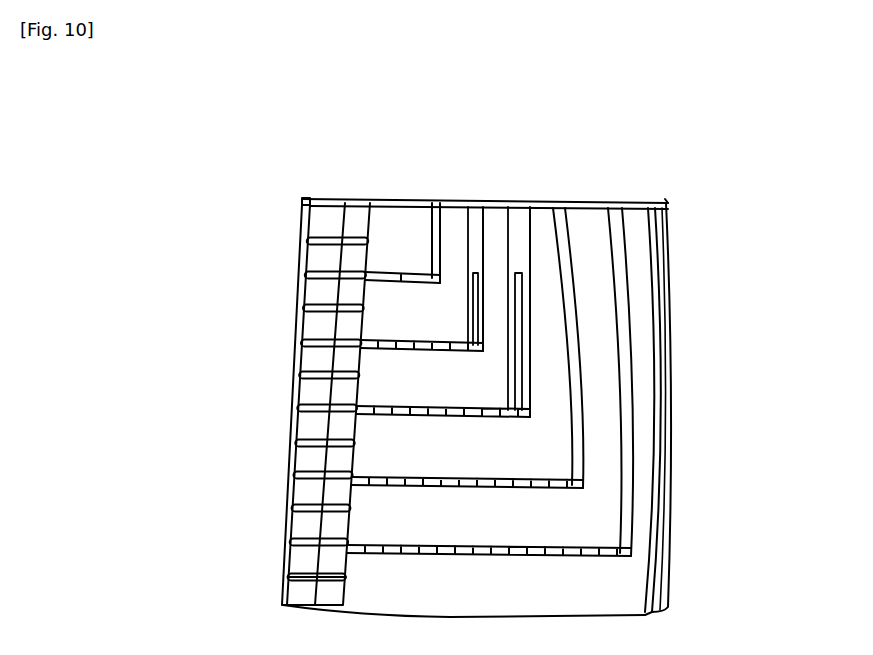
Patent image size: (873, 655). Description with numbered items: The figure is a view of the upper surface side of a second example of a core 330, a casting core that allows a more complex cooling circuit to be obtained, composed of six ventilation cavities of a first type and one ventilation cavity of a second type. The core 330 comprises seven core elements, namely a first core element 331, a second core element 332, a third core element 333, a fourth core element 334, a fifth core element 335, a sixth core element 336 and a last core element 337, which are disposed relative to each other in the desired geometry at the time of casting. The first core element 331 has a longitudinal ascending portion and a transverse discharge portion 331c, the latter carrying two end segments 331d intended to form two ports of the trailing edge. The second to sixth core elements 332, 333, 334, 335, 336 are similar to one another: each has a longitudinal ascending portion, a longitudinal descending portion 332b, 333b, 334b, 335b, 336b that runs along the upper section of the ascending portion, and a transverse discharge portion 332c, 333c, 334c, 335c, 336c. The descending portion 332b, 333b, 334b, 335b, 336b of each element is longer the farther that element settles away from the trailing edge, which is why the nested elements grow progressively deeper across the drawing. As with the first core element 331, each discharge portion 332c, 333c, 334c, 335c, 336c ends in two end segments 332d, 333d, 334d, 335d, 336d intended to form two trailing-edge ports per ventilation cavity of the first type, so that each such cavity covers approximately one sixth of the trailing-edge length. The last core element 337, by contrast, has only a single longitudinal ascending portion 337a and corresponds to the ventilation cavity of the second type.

The core 330 is at (742, 184).
The first core element 331 is at (397, 200).
The transverse discharge portion 331c is at (374, 206).
The end segments 331d is at (298, 245).
The second core element 332 is at (449, 206).
The longitudinal descending portion 332b is at (457, 236).
The transverse discharge portion 332c is at (402, 313).
The end segments 332d is at (294, 318).
The third core element 333 is at (482, 206).
The longitudinal descending portion 333b is at (497, 265).
The transverse discharge portion 333c is at (398, 385).
The end segments 333d is at (292, 385).
The fourth core element 334 is at (524, 206).
The longitudinal descending portion 334b is at (548, 400).
The transverse discharge portion 334c is at (398, 452).
The end segments 334d is at (287, 450).
The fifth core element 335 is at (563, 206).
The longitudinal descending portion 335b is at (603, 457).
The transverse discharge portion 335c is at (397, 520).
The end segments 335d is at (287, 520).
The sixth core element 336 is at (625, 206).
The longitudinal descending portion 336b is at (643, 524).
The transverse discharge portion 336c is at (392, 592).
The end segments 336d is at (287, 595).
The seventh core element 337 is at (648, 206).
The longitudinal ascending portion 337a is at (665, 588).